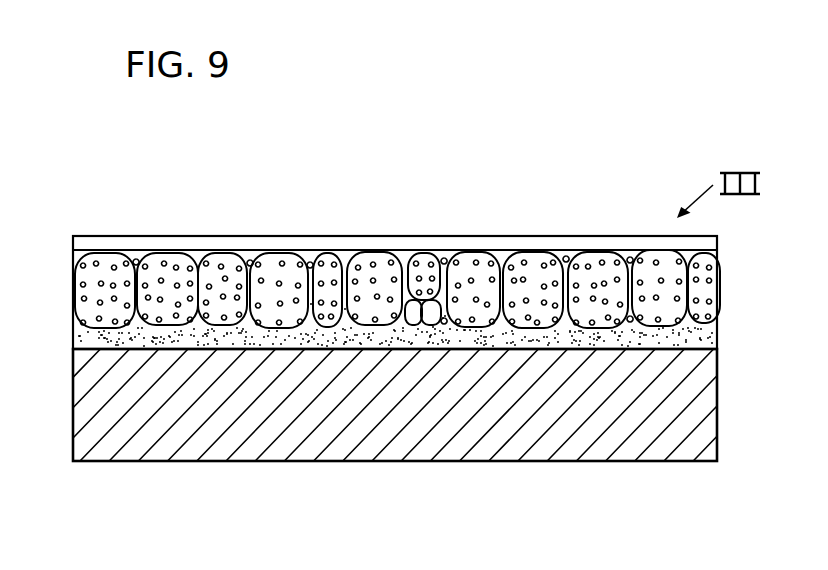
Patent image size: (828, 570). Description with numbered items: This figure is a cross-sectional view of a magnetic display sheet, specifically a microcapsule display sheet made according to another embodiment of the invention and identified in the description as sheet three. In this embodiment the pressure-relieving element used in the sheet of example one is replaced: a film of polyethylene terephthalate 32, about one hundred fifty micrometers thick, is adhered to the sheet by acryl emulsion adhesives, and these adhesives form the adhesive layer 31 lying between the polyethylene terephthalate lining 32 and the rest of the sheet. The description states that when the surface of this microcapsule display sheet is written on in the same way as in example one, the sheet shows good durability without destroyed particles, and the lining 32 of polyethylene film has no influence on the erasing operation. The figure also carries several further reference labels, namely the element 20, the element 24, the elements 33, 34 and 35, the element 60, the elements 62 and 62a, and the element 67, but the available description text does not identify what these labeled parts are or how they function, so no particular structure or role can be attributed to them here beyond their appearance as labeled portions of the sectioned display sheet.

The abrasive layer 20 is at (722, 249).
The top sheet 24 is at (252, 248).
The adhesive layer 31 is at (110, 278).
The polyethylene terephthalate 32 is at (160, 262).
The abrasive particle 33 is at (322, 262).
The small abrasive particle 34 is at (412, 262).
The fine particles 35 is at (455, 262).
The substrate 60 is at (722, 350).
The adhesive layer 62 is at (88, 338).
The adhesive portions 62a is at (133, 312).
The interface 67 is at (80, 360).